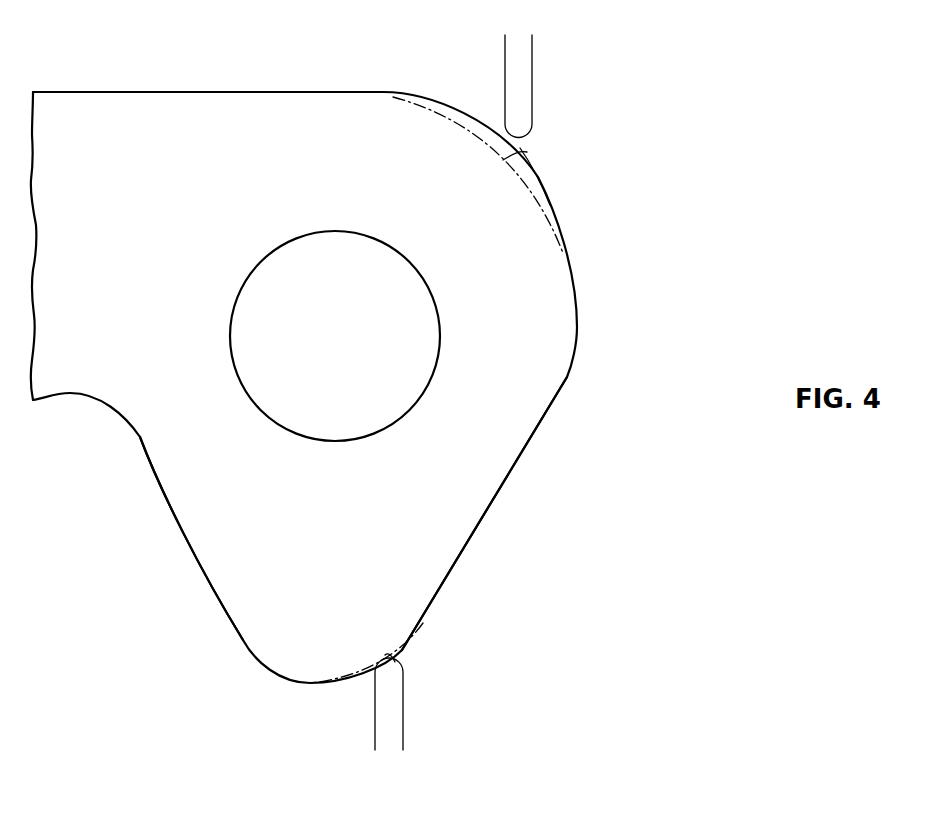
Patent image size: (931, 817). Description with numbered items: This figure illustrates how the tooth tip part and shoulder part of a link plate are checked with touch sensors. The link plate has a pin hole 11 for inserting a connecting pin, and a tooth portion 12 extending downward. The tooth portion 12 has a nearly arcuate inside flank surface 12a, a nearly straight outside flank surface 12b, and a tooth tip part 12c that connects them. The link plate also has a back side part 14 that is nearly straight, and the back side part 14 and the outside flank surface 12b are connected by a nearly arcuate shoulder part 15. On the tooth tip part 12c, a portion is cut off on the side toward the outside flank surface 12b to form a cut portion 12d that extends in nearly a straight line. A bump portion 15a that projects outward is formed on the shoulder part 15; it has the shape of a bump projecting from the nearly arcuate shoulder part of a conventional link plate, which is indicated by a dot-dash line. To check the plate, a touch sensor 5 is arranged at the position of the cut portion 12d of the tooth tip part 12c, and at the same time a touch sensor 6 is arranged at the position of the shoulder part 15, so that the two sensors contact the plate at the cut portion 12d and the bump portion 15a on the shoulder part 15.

The touch sensor 5 is at (392, 727).
The touch sensor 6 is at (522, 67).
The pin hole 11 is at (258, 264).
The tooth portion 12 is at (258, 633).
The inside flank surface 12a is at (177, 528).
The outside flank surface 12b is at (503, 480).
The tooth tip part 12c is at (308, 682).
The cut portion 12d is at (402, 653).
The back side part 14 is at (137, 90).
The shoulder part 15 is at (533, 183).
The bump portion 15a is at (513, 136).